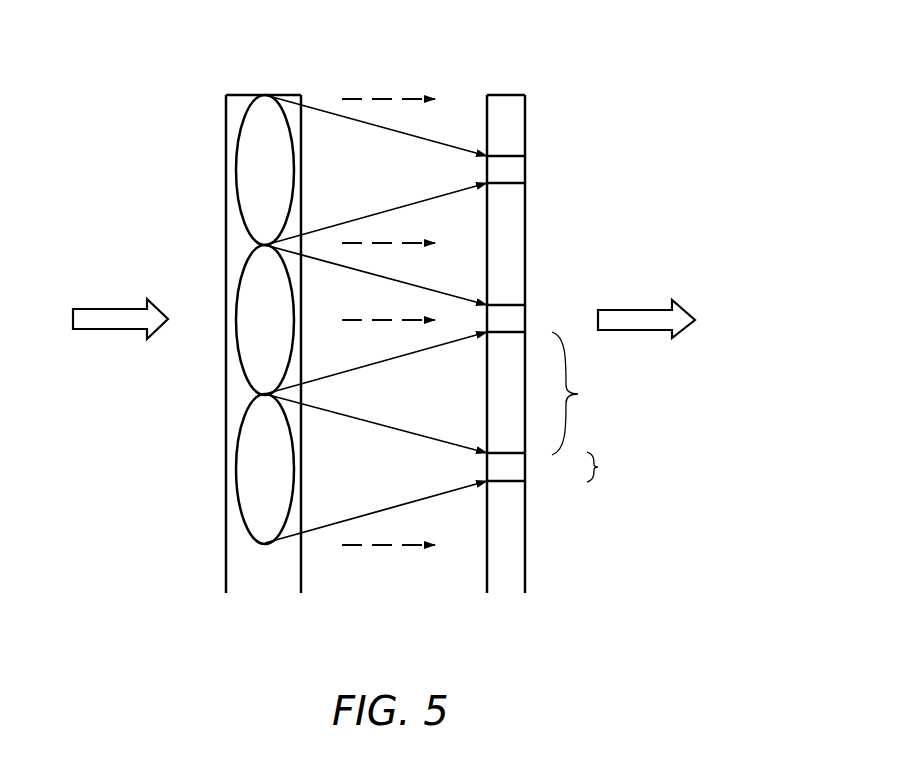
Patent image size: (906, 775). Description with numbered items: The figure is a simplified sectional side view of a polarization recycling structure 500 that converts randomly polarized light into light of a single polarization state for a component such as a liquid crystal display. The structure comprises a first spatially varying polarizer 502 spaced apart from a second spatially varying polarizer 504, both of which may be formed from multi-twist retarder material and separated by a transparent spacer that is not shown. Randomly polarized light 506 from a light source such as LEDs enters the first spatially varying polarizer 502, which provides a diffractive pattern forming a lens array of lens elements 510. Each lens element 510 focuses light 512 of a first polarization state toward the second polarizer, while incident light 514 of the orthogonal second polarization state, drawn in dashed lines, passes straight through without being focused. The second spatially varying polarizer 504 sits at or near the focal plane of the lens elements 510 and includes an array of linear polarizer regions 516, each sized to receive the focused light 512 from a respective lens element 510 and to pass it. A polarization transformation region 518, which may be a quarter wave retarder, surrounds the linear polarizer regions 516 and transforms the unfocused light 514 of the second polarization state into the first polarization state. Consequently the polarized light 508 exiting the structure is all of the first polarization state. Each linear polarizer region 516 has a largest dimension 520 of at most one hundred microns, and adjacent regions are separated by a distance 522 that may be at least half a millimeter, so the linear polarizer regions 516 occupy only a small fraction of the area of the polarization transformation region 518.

The polarization recycling structure 500 is at (708, 82).
The first spatially varying polarizer 502 is at (291, 95).
The second spatially varying polarizer 504 is at (525, 105).
The randomly polarized light 506 is at (110, 309).
The polarized light 508 is at (636, 310).
The lens elements 510 is at (250, 158).
The focused light 512 is at (436, 140).
The incident light of second polarization state 514 is at (376, 548).
The linear polarizer regions 516 is at (515, 168).
The polarization transformation region 518 is at (515, 230).
The largest dimension 520 is at (617, 468).
The distance 522 is at (589, 393).